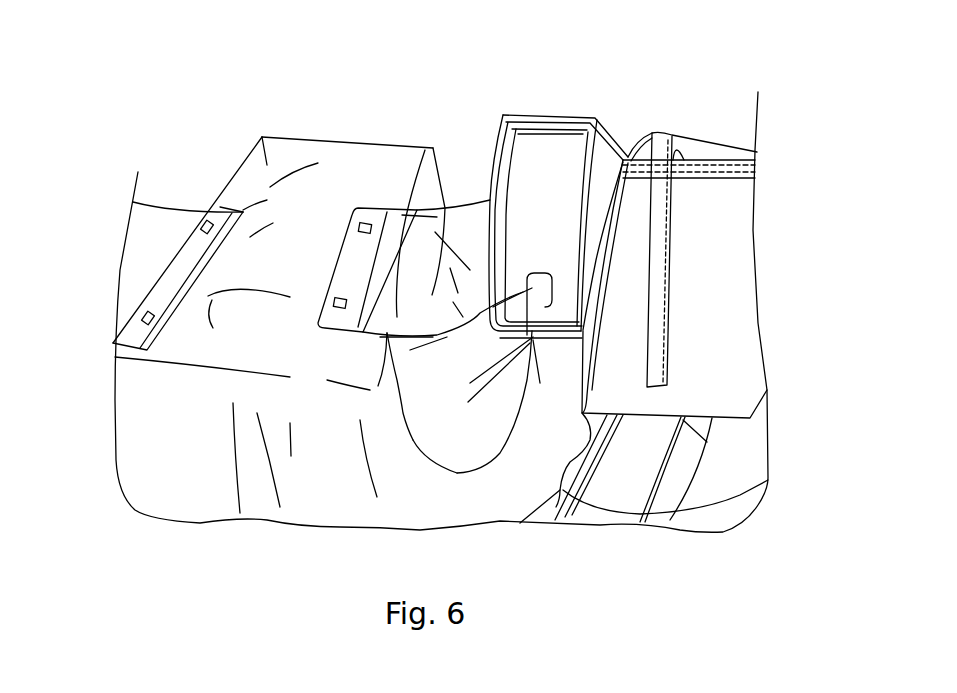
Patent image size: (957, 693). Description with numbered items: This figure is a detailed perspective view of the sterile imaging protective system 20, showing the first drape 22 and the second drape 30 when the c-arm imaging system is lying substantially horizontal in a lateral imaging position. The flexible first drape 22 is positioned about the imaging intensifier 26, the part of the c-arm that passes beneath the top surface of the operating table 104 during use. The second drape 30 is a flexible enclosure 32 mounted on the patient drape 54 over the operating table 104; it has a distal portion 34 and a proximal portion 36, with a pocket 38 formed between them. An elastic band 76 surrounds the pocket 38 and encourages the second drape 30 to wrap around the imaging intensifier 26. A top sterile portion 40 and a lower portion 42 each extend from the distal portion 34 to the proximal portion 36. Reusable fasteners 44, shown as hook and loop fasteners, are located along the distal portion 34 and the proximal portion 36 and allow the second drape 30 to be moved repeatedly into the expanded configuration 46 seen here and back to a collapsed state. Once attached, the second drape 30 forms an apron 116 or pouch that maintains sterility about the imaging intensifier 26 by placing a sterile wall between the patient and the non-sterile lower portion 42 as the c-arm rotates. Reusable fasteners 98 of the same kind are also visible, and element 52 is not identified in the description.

The sterile imaging protective system 20 is at (690, 100).
The first drape 22 is at (622, 118).
The imaging intensifier 26 is at (542, 157).
The second drape 30 is at (444, 128).
The flexible enclosure 32 is at (470, 345).
The distal portion 34 is at (625, 500).
The proximal portion 36 is at (352, 258).
The pocket 38 is at (358, 332).
The top sterile portion 40 is at (400, 277).
The lower portion 42 is at (483, 433).
The reusable fasteners 44 is at (365, 226).
The expanded configuration 46 is at (433, 428).
The strap 52 is at (688, 463).
The patient drape 54 is at (262, 137).
The elastic band 76 is at (532, 337).
The reusable fasteners 98 is at (207, 212).
The operating table 104 is at (155, 468).
The apron 116 is at (423, 390).